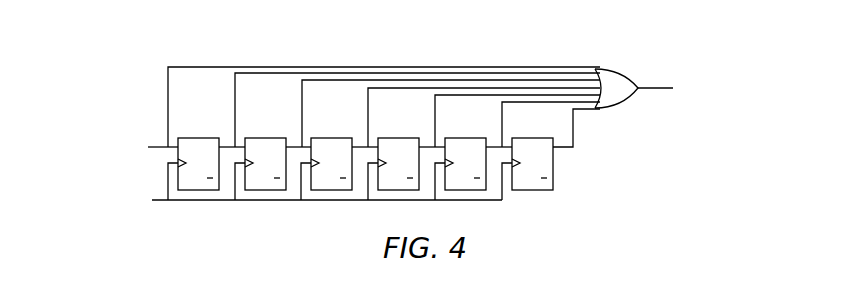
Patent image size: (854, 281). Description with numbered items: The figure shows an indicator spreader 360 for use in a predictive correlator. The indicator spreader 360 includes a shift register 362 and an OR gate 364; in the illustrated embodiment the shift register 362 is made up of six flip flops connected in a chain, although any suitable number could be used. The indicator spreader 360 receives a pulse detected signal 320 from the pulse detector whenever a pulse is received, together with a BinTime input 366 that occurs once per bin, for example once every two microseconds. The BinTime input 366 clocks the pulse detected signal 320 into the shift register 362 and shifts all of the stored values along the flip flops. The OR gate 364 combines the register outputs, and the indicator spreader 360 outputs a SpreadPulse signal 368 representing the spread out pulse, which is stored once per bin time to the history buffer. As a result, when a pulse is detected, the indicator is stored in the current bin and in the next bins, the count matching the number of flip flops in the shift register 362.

The indicator spreader 360 is at (97, 68).
The pulse detected signal 320 is at (158, 147).
The shift register 362 is at (575, 175).
The OR gate 364 is at (603, 72).
The BinTime input 366 is at (162, 200).
The SpreadPulse signal 368 is at (666, 90).